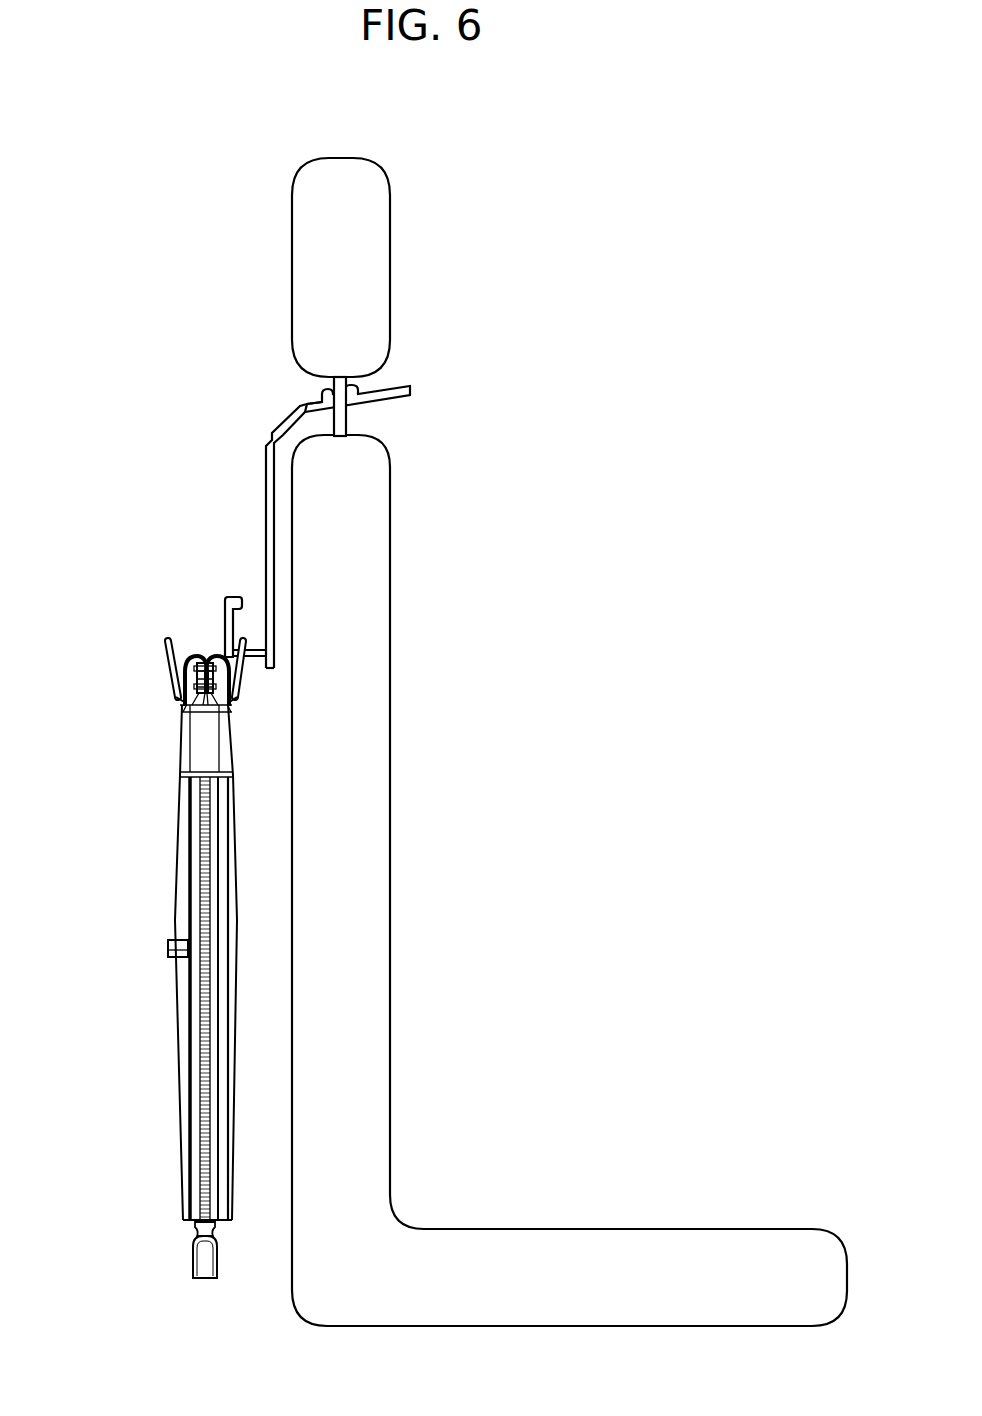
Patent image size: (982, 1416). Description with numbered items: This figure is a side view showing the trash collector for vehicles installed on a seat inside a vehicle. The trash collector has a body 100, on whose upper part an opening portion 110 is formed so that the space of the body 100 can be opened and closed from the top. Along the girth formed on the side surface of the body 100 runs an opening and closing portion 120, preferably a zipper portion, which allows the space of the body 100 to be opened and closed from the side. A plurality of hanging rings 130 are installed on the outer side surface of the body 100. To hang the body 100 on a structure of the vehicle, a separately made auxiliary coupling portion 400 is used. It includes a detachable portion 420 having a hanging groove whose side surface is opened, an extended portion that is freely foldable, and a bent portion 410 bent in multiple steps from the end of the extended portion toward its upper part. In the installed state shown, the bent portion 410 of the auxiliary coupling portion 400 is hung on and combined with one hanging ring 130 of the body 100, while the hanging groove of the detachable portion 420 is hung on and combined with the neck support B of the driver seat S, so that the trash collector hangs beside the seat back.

The body 100 is at (144, 926).
The opening portion 110 is at (188, 652).
The opening and closing portion 120 is at (200, 1152).
The hanging ring 130 is at (230, 652).
The auxiliary coupling portion 400 is at (267, 469).
The bent portion 410 is at (238, 597).
The detachable portion 420 is at (266, 455).
The neck support B is at (355, 428).
The driver seat S is at (380, 905).